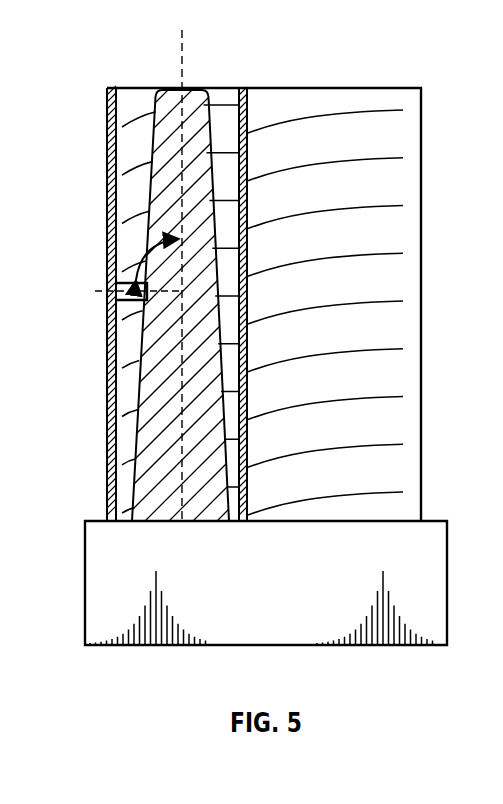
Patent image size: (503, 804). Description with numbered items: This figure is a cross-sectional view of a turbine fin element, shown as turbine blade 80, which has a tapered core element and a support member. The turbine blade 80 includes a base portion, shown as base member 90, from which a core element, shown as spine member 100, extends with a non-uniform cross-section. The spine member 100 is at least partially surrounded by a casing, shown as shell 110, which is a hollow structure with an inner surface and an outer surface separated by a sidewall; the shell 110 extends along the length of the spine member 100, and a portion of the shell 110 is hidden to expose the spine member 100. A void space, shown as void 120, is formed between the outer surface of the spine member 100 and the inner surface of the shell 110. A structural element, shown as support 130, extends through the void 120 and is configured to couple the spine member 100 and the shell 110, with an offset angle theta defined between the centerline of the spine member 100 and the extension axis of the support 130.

The turbine blade 80 is at (102, 52).
The base member 90 is at (437, 537).
The spine member 100 is at (136, 190).
The shell 110 is at (406, 131).
The void 120 is at (138, 143).
The support 130 is at (118, 284).